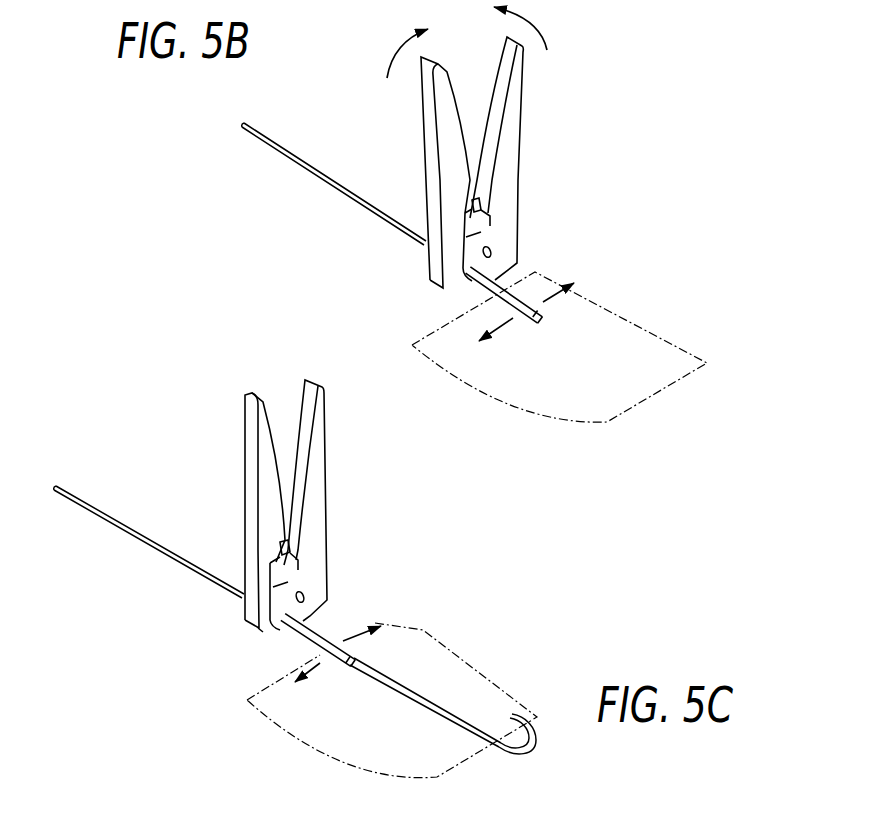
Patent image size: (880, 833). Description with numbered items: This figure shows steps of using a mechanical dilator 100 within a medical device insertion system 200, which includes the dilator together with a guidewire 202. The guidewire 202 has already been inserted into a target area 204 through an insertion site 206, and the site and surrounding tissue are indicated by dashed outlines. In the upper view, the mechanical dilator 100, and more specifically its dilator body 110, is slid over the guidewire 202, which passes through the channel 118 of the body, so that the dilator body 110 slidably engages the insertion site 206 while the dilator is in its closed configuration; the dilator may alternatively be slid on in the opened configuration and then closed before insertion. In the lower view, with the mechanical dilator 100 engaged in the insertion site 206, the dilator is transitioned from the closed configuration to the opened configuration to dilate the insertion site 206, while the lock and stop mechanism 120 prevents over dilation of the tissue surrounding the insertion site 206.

In FIG. 5B, the medical device insertion system 200 is at (578, 116).
In FIG. 5B, the mechanical dilator 100 is at (400, 124).
In FIG. 5C, the mechanical dilator 100 is at (236, 471).
In FIG. 5B, the dilator body 110 is at (478, 273).
In FIG. 5C, the dilator body 110 is at (298, 628).
In FIG. 5B, the channel 118 is at (549, 328).
In FIG. 5B, the lock and stop mechanism 120 is at (458, 209).
In FIG. 5C, the lock and stop mechanism 120 is at (279, 551).
In FIG. 5B, the guidewire 202 is at (268, 147).
In FIG. 5C, the guidewire 202 is at (105, 520).
In FIG. 5B, the target area 204 is at (615, 316).
In FIG. 5C, the target area 204 is at (433, 747).
In FIG. 5B, the insertion site 206 is at (533, 285).
In FIG. 5C, the insertion site 206 is at (372, 652).